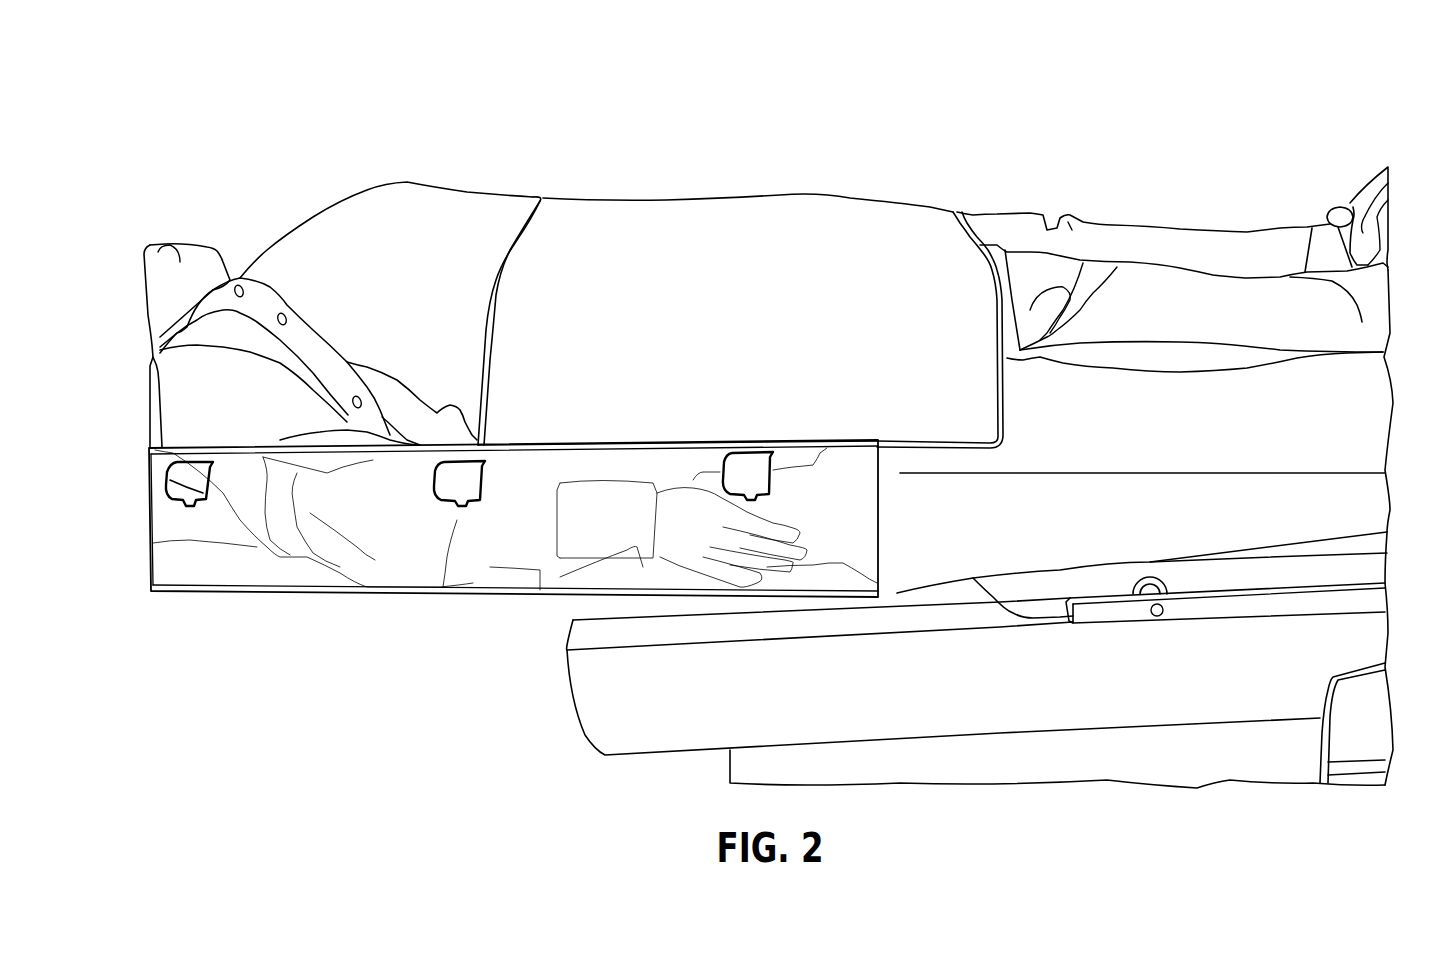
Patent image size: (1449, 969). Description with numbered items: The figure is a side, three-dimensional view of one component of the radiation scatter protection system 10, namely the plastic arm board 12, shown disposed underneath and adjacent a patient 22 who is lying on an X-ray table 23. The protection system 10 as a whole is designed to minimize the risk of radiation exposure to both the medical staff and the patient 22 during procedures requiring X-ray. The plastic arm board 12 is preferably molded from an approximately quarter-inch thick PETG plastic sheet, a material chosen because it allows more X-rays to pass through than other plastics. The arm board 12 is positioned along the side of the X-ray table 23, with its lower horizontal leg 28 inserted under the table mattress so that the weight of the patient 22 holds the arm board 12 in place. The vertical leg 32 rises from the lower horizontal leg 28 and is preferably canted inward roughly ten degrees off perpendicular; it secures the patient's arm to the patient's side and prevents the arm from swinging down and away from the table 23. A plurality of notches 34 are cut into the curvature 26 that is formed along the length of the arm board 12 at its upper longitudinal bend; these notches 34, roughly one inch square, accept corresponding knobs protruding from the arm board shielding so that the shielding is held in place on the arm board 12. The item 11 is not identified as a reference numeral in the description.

The protection system 10 is at (455, 85).
The patient 11 is at (667, 233).
The plastic arm board 12 is at (310, 580).
The patient 22 is at (180, 262).
The X-ray table 23 is at (1353, 572).
The curvature 26 is at (597, 447).
The lower horizontal leg 28 is at (172, 597).
The vertical leg 32 is at (880, 530).
The notches 34 is at (170, 480).